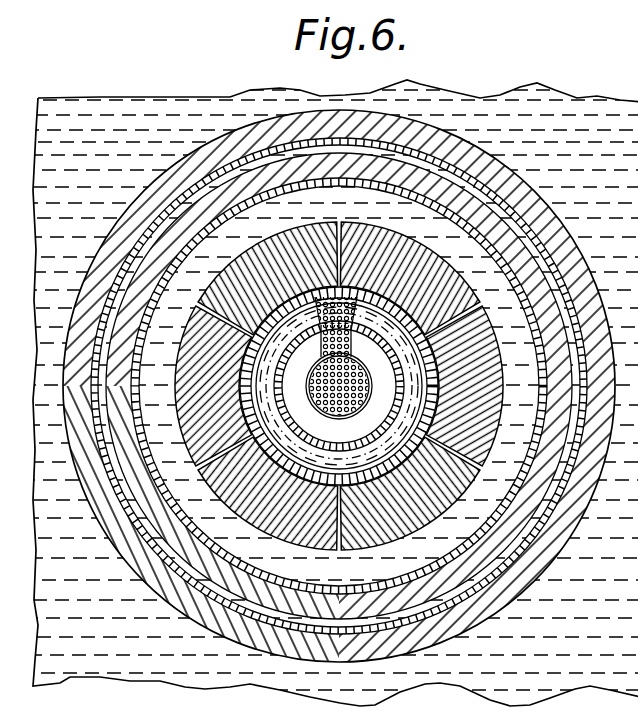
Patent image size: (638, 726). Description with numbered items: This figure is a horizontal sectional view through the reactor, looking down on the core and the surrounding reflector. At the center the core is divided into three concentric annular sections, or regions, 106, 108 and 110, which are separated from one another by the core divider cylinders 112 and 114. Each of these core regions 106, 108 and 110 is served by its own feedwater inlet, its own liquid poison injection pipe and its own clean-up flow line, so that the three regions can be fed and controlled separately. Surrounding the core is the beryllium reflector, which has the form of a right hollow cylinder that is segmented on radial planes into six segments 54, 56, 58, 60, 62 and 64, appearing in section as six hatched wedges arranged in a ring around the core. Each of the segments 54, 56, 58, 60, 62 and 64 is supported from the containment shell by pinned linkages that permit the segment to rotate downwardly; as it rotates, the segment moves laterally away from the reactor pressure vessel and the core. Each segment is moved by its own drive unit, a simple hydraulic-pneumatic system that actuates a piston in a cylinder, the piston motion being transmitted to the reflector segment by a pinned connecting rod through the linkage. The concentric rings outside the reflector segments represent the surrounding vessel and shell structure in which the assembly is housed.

The reflector segment 54 is at (386, 287).
The reflector segment 56 is at (459, 401).
The reflector segment 58 is at (384, 512).
The reflector segment 60 is at (276, 512).
The reflector segment 62 is at (188, 401).
The reflector segment 64 is at (251, 287).
The core region 106 is at (339, 386).
The core region 108 is at (317, 430).
The core region 110 is at (326, 465).
The core divider cylinder 112 is at (353, 365).
The core divider cylinder 114 is at (383, 336).